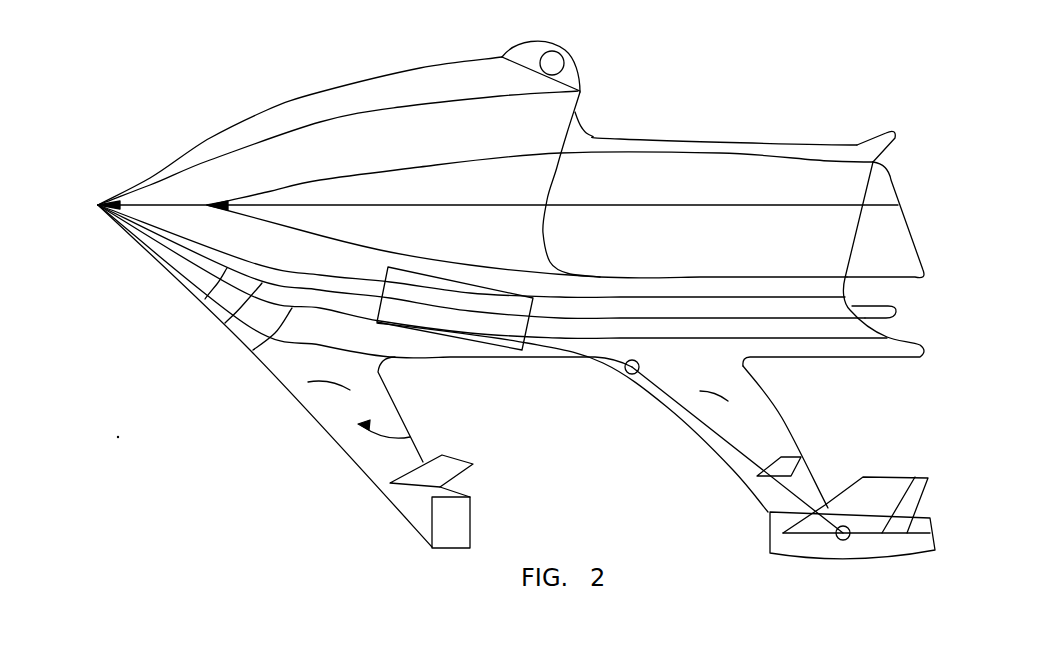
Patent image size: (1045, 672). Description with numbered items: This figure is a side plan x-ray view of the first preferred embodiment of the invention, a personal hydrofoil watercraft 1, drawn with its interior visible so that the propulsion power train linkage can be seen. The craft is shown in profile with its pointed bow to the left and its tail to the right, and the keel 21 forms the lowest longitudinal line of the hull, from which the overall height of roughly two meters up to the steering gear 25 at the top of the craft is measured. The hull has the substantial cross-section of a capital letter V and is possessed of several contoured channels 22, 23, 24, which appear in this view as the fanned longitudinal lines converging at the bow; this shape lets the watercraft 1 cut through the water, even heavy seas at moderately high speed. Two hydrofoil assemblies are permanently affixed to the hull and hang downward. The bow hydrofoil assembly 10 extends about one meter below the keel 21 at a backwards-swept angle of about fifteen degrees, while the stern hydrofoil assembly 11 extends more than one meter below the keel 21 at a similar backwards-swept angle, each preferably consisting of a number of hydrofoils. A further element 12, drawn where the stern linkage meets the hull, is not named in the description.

The personal hydrofoil watercraft 1 is at (744, 114).
The bow hydrofoil assembly 10 is at (342, 412).
The stern hydrofoil assembly 11 is at (782, 420).
The pivot linkage 12 is at (598, 363).
The keel 21 is at (516, 356).
The contoured channel 22 is at (253, 352).
The contoured channel 23 is at (226, 323).
The contoured channel 24 is at (205, 298).
The steering gear 25 is at (517, 43).